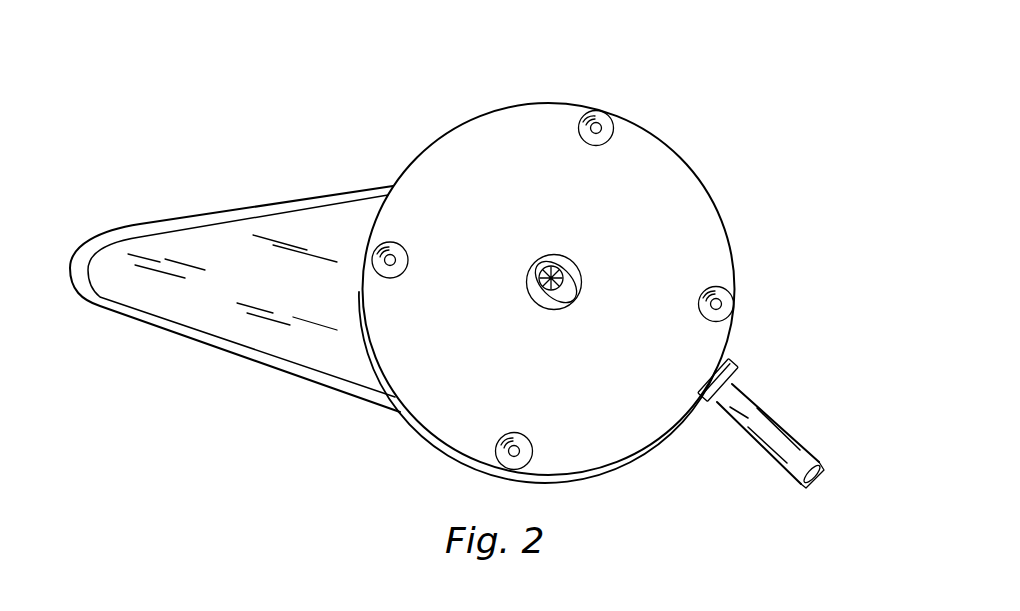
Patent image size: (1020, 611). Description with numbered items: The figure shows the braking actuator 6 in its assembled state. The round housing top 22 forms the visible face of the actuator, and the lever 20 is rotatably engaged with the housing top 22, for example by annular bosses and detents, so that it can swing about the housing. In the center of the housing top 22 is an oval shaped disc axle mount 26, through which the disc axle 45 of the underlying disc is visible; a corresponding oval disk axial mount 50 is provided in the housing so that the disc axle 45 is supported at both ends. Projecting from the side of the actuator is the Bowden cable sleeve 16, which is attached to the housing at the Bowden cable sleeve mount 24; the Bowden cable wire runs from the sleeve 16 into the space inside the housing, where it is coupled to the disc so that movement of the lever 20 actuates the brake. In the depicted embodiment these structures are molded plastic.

The braking actuator 6 is at (752, 222).
The Bowden cable sleeve 16 is at (757, 447).
The lever 20 is at (142, 293).
The housing top 22 is at (455, 128).
The Bowden cable sleeve mount 24 is at (738, 370).
The oval shaped disc axle mount 26 is at (578, 278).
The disc axle 45 is at (542, 283).
The oval disk axial mount 50 is at (576, 303).